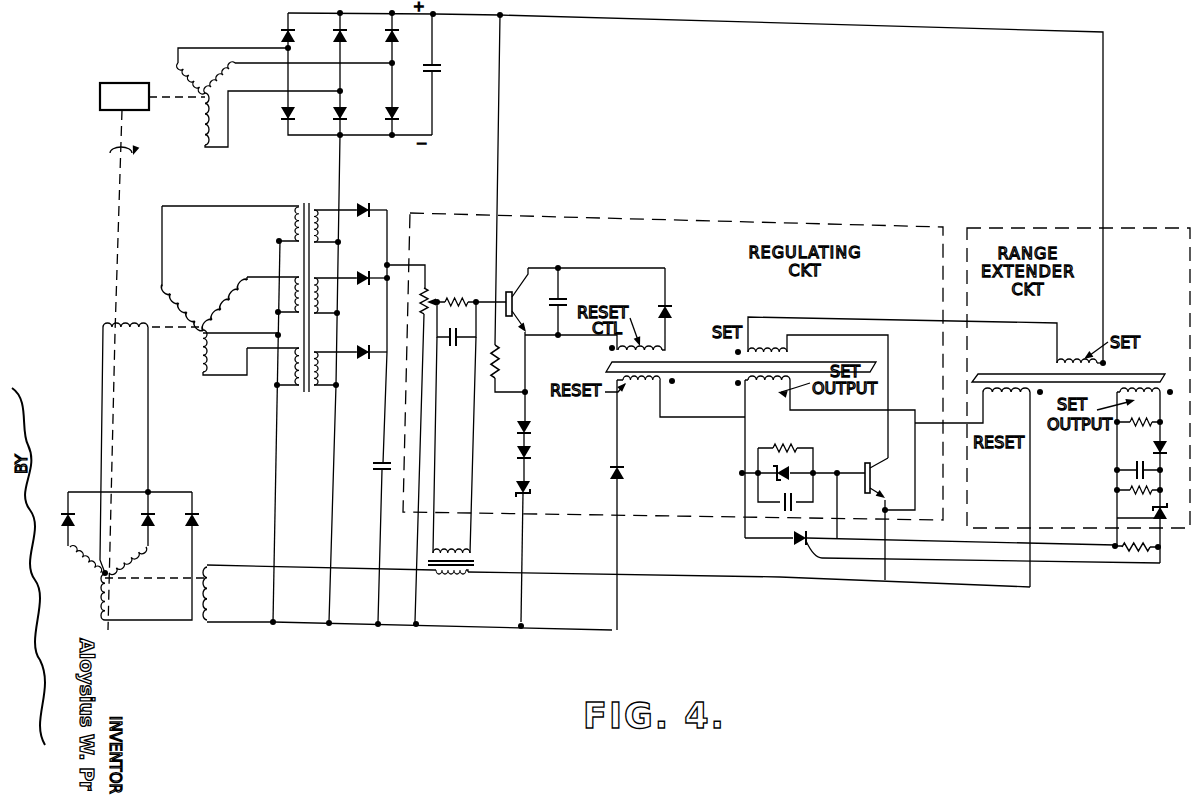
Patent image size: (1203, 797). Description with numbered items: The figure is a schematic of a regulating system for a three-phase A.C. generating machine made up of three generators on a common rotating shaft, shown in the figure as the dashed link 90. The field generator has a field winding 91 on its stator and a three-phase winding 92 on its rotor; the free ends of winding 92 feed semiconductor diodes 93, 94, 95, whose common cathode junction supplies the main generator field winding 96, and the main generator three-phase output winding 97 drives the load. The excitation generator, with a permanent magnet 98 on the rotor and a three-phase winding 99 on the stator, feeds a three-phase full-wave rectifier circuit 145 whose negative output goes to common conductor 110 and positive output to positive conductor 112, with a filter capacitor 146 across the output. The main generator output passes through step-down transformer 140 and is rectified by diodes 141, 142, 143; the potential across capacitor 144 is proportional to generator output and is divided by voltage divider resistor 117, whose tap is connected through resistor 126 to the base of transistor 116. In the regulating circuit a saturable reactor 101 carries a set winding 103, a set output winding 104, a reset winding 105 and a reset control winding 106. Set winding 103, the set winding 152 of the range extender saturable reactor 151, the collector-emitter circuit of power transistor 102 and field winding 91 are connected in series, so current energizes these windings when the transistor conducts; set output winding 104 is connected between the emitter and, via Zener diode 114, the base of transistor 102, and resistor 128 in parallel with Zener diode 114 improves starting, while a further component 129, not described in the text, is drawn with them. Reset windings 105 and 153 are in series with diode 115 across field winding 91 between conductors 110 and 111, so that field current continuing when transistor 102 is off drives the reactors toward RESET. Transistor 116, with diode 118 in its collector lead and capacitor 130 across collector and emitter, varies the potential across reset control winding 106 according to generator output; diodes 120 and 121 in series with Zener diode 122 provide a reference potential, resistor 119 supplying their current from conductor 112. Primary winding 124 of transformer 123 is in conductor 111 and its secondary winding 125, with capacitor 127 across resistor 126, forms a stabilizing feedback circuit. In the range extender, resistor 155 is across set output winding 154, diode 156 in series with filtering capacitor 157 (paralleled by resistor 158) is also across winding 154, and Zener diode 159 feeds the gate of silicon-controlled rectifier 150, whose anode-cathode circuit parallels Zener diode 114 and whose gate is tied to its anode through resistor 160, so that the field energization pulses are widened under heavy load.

The rotor shaft 90 is at (121, 411).
The field winding 91 is at (214, 596).
The three-phase winding 92 is at (98, 578).
The semiconductor diode 93 is at (72, 512).
The semiconductor diode 94 is at (150, 516).
The semiconductor diode 95 is at (199, 518).
The field winding 96 is at (103, 322).
The three-phase output winding 97 is at (203, 314).
The permanent magnet 98 is at (143, 82).
The three-phase winding 99 is at (206, 68).
The saturable reactor 101 is at (802, 366).
The power transistor 102 is at (867, 463).
The set winding 103 is at (782, 337).
The set output winding 104 is at (750, 386).
The reset winding 105 is at (638, 384).
The reset control winding 106 is at (663, 346).
The common conductor 110 is at (556, 632).
The conductor 111 is at (552, 578).
The positive conductor 112 is at (703, 21).
The Zener diode 114 is at (799, 468).
The semiconductor diode 115 is at (624, 475).
The transistor 116 is at (517, 291).
The voltage divider resistor 117 is at (428, 299).
The semiconductor diode 118 is at (672, 310).
The resistor 119 is at (497, 358).
The semiconductor diode 120 is at (530, 427).
The semiconductor diode 121 is at (530, 452).
The Zener diode 122 is at (529, 487).
The transformer 123 is at (480, 562).
The primary winding 124 is at (447, 575).
The secondary winding 125 is at (467, 553).
The resistor 126 is at (459, 300).
The capacitor 127 is at (470, 322).
The resistor 128 is at (798, 447).
The capacitor 129 is at (794, 504).
The capacitor 130 is at (564, 298).
The three-phase step-down transformer 140 is at (308, 200).
The semiconductor diode 141 is at (366, 203).
The semiconductor diode 142 is at (362, 272).
The semiconductor diode 143 is at (357, 343).
The filter capacitor 144 is at (380, 470).
The three-phase full-wave rectifier circuit 145 is at (380, 146).
The filter capacitor 146 is at (437, 70).
The silicon-controlled rectifier 150 is at (802, 545).
The saturable reactor 151 is at (1173, 362).
The set winding 152 is at (1067, 357).
The reset winding 153 is at (1004, 396).
The set output winding 154 is at (1120, 392).
The resistor 155 is at (1137, 423).
The semiconductor diode 156 is at (1158, 442).
The filtering capacitor 157 is at (1130, 471).
The resistor 158 is at (1132, 490).
The Zener diode 159 is at (1150, 508).
The resistor 160 is at (1133, 555).